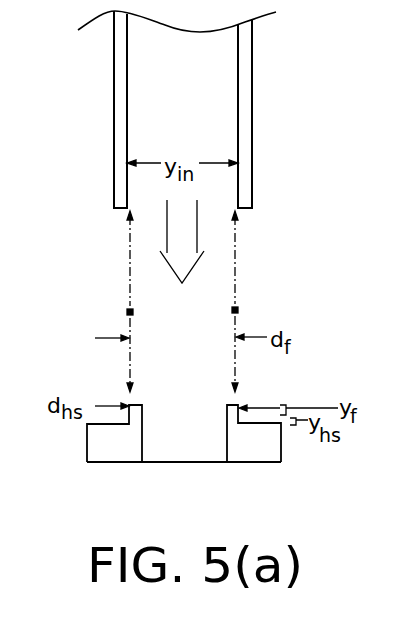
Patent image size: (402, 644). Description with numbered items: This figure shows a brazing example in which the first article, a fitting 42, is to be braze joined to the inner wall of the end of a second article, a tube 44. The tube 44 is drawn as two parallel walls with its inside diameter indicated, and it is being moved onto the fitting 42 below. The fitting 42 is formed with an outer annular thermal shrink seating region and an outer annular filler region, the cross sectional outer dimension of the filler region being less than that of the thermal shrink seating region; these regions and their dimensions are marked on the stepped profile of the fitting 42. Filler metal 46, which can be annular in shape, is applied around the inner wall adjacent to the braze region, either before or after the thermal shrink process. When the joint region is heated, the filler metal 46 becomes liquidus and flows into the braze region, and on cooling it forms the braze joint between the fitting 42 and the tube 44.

The tube 44 is at (250, 70).
The filler metal 46 is at (127, 312).
The fitting 42 is at (110, 434).